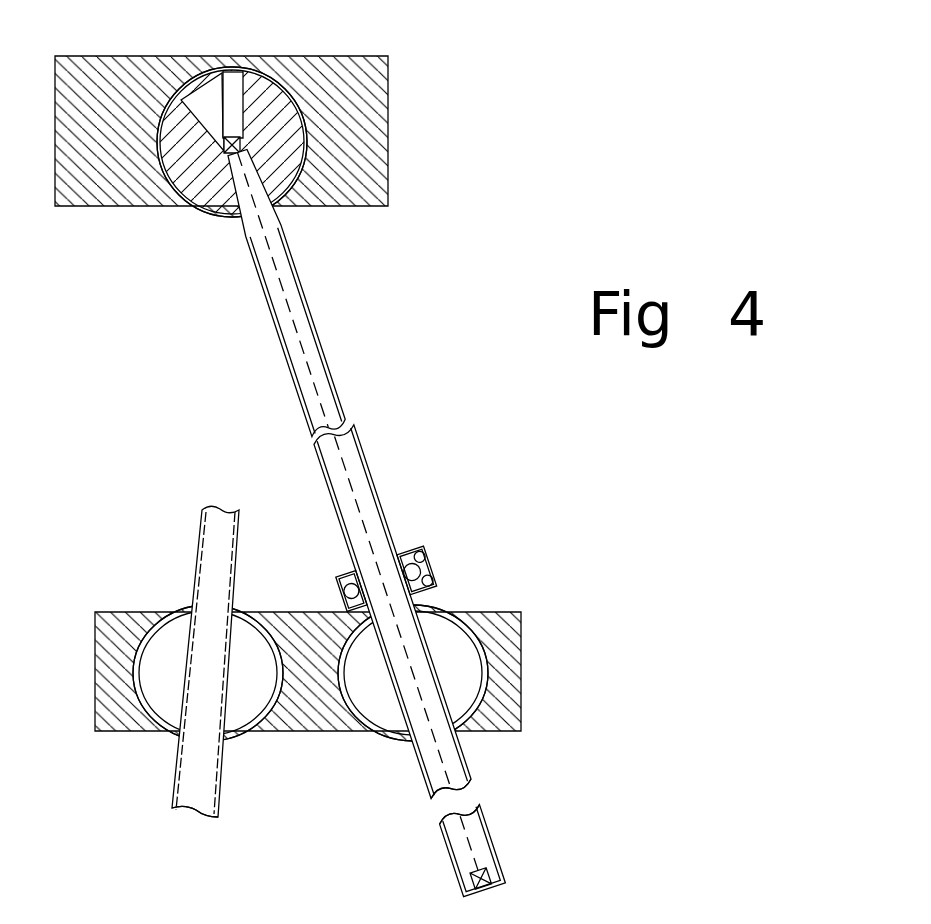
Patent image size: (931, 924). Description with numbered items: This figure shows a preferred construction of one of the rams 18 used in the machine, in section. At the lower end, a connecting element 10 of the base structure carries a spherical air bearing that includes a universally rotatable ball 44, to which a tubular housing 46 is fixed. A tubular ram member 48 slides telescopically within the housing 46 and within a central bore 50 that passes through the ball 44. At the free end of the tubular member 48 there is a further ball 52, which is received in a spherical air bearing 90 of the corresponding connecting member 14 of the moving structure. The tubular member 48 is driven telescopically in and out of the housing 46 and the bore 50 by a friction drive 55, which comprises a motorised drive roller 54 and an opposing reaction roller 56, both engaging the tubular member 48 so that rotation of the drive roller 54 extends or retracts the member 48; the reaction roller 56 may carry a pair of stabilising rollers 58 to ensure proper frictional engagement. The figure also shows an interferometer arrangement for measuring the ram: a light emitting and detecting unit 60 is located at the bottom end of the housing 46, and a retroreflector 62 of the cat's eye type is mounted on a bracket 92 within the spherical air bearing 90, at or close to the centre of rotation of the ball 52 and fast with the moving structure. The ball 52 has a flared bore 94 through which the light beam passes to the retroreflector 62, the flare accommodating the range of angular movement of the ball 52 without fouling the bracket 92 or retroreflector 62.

The connecting element 10 is at (521, 682).
The connecting member 14 is at (388, 120).
The ram 18 is at (378, 383).
The ball 44 is at (162, 706).
The tubular housing 46 is at (438, 812).
The tubular ram member 48 is at (317, 335).
The central bore 50 is at (190, 625).
The further ball 52 is at (206, 200).
The motorised drive roller 54 is at (344, 583).
The friction drive 55 is at (429, 551).
The reaction roller 56 is at (412, 566).
The stabilising rollers 58 is at (430, 584).
The light emitting and detecting unit 60 is at (493, 872).
The retroreflector 62 is at (222, 135).
The spherical air bearing 90 is at (159, 166).
The bracket 92 is at (241, 76).
The flared bore 94 is at (185, 92).